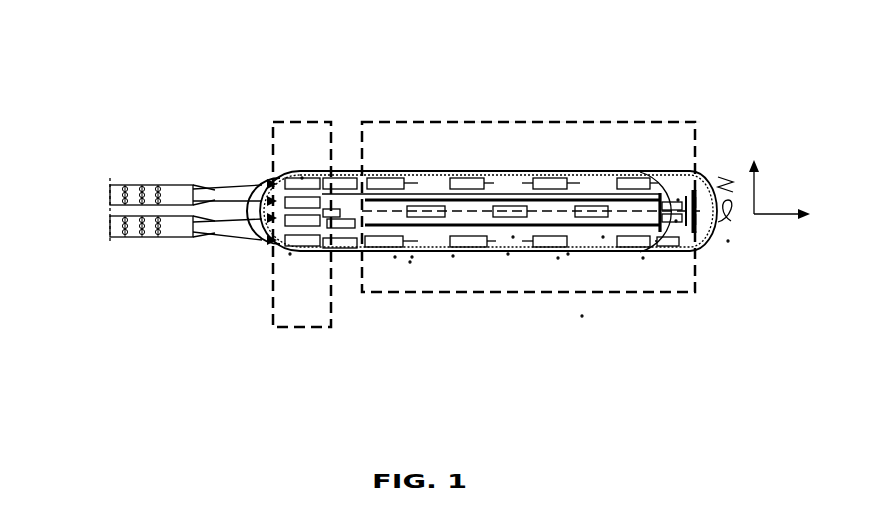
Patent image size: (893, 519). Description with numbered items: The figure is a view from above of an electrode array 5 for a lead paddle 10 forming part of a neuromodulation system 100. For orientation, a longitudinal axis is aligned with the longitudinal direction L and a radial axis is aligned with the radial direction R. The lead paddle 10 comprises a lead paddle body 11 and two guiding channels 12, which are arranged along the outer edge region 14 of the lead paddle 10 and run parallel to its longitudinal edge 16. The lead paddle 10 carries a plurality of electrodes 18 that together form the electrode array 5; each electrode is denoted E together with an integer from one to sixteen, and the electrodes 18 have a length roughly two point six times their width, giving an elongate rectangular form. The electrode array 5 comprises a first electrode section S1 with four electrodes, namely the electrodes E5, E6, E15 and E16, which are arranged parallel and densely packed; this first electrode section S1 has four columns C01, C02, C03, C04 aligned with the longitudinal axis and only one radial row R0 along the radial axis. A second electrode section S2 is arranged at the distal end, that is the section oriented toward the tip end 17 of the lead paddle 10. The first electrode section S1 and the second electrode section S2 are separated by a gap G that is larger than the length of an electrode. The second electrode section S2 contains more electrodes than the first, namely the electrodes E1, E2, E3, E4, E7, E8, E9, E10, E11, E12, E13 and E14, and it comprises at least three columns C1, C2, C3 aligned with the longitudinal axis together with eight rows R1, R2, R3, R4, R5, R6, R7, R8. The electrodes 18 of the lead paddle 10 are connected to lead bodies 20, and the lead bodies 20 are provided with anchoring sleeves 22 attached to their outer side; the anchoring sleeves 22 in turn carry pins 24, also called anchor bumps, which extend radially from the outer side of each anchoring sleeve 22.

The neuromodulation system 100 is at (712, 14).
The electrode array 5 is at (555, 122).
The lead paddle 10 is at (608, 347).
The lead paddle body 11 is at (410, 268).
The guiding channels 12 is at (462, 176).
The outer edge region 14 is at (430, 206).
The longitudinal edge 16 is at (383, 176).
The tip end 17 is at (736, 245).
The electrodes 18 is at (715, 165).
The lead bodies 20 is at (156, 231).
The anchoring sleeves 22 is at (110, 193).
The pins 24 is at (110, 190).
The gap G is at (318, 108).
The first electrode section S1 is at (278, 327).
The second electrode section S2 is at (690, 122).
The radial row R0 is at (290, 262).
The first row R1 is at (397, 268).
The second row R2 is at (385, 264).
The third row R3 is at (445, 333).
The fourth row R4 is at (500, 330).
The fifth row R5 is at (545, 341).
The sixth row R6 is at (590, 323).
The seventh row R7 is at (648, 305).
The eighth row R8 is at (711, 167).
The first column C1 is at (509, 254).
The second column C2 is at (568, 254).
The third column C3 is at (678, 190).
The first column of first electrode section C01 is at (265, 240).
The second column of first electrode section C02 is at (265, 217).
The third column of first electrode section C03 is at (265, 200).
The fourth column of first electrode section C04 is at (265, 184).
The electrode E1 is at (645, 258).
The electrode E2 is at (531, 266).
The electrode E3 is at (455, 267).
The electrode E4 is at (377, 269).
The electrode E5 is at (310, 266).
The electrode E6 is at (262, 265).
The electrode E7 is at (680, 287).
The electrode E8 is at (604, 269).
The electrode E9 is at (507, 169).
The electrode E10 is at (396, 168).
The electrode E11 is at (654, 159).
The electrode E12 is at (570, 155).
The electrode E13 is at (462, 160).
The electrode E14 is at (335, 158).
The electrode E15 is at (295, 178).
The electrode E16 is at (290, 200).
The radial direction R is at (764, 182).
The longitudinal direction L is at (782, 231).